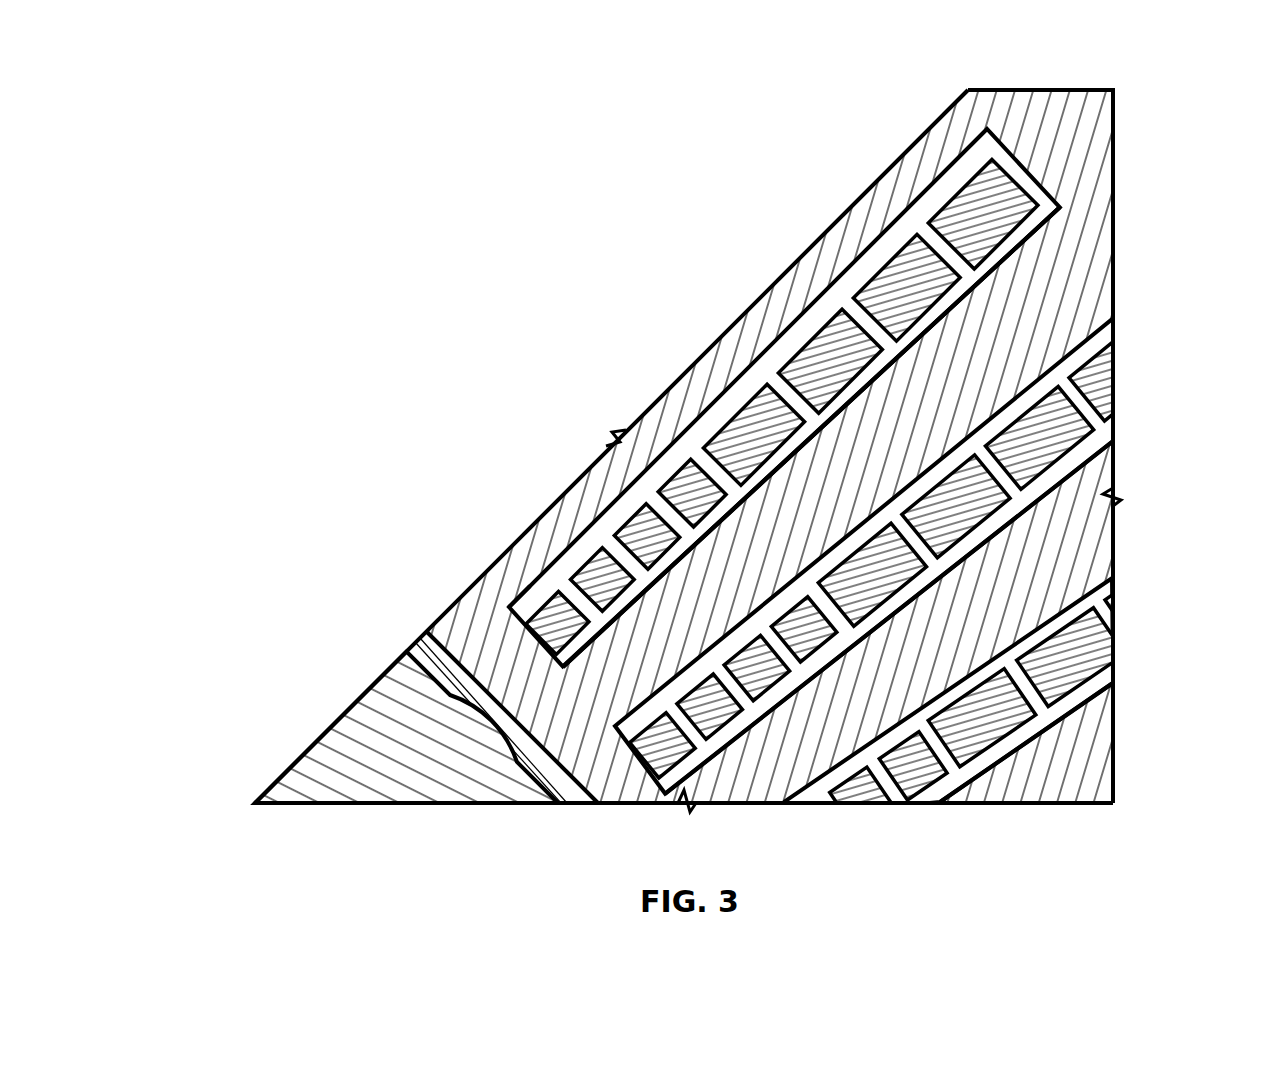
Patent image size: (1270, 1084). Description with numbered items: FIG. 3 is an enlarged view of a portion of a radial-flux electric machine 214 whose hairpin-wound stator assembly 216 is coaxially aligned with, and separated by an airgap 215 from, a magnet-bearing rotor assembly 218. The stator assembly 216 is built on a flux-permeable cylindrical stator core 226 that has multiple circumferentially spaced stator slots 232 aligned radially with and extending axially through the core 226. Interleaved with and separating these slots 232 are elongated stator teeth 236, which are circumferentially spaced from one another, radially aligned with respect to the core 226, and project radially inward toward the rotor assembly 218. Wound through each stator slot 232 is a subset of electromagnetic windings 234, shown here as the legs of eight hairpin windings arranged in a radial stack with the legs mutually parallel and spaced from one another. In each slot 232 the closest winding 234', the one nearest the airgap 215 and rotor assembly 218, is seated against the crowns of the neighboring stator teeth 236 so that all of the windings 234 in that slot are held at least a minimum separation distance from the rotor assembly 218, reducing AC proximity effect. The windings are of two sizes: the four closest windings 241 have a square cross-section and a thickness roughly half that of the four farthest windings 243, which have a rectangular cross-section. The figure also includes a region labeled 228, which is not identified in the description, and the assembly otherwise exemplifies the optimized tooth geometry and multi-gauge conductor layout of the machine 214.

The electric machine 214 is at (436, 293).
The airgap 215 is at (413, 632).
The stator assembly 216 is at (794, 254).
The rotor assembly 218 is at (296, 752).
The stator core 226 is at (893, 165).
The wedge portion 228 is at (340, 712).
The stator slots 232 is at (1060, 197).
The electromagnetic windings 234 is at (873, 488).
The closest winding 234' is at (466, 561).
The stator teeth 236 is at (690, 367).
The four closest windings 241 is at (748, 505).
The four farthest windings 243 is at (753, 505).